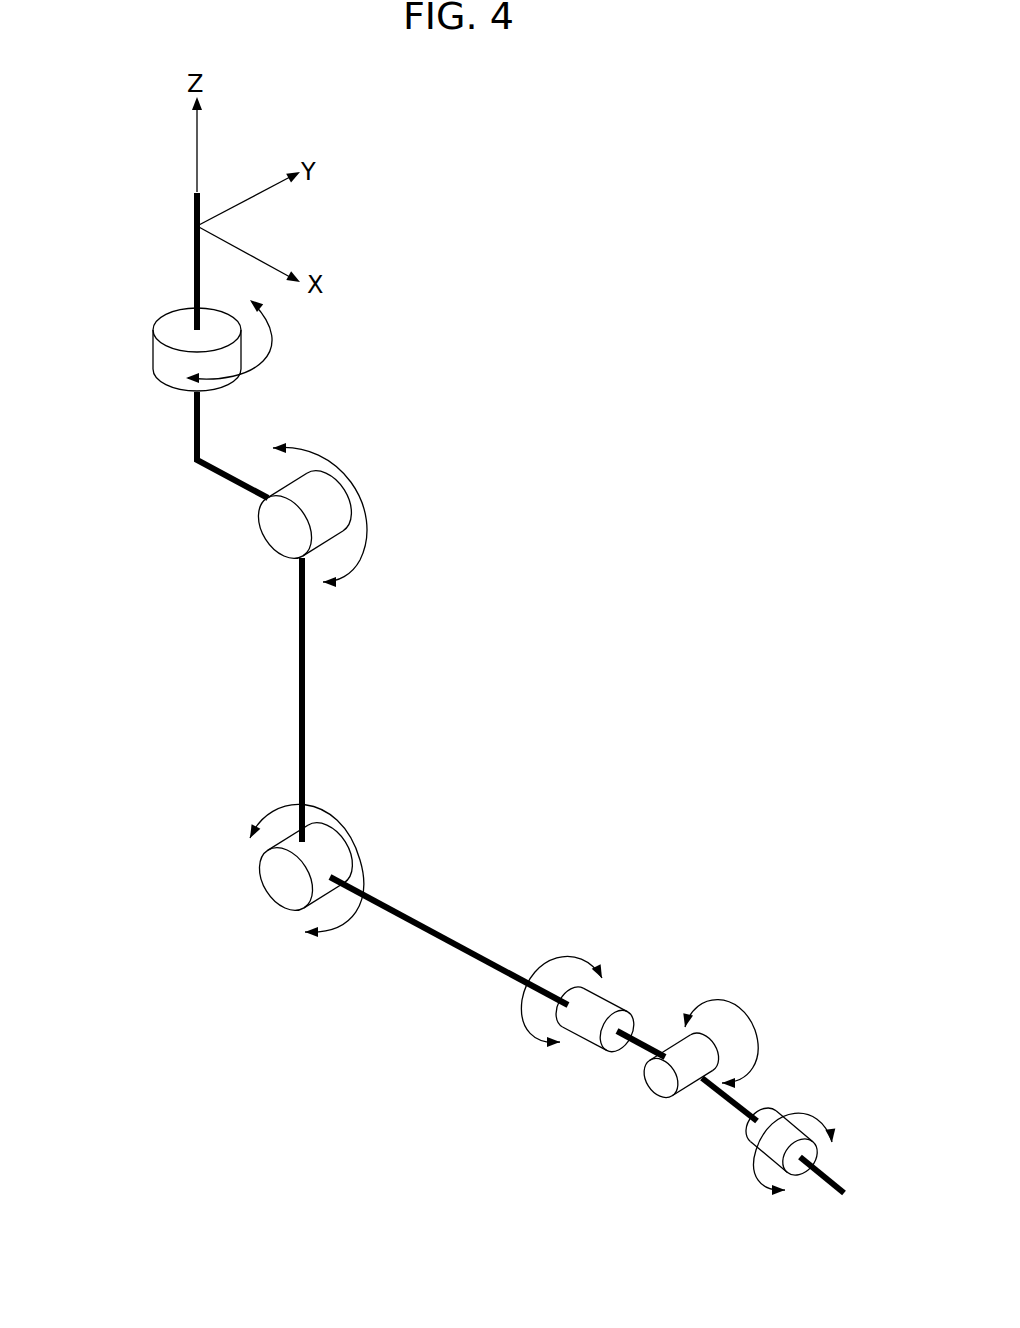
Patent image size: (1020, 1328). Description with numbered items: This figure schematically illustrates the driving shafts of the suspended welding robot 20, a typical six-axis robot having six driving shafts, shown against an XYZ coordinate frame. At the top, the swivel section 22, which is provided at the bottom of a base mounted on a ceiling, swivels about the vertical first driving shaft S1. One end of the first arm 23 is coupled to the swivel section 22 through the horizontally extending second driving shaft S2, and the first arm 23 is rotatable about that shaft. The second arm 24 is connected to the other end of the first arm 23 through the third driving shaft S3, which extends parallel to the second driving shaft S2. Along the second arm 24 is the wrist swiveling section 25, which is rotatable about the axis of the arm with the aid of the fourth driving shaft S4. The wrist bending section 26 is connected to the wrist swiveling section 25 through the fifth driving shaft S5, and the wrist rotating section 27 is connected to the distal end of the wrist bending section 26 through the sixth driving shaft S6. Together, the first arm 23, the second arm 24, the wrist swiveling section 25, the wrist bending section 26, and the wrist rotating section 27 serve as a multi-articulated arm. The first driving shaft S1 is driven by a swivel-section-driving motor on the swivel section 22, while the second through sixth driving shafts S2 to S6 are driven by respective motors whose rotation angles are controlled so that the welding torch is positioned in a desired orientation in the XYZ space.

The suspended welding robot 20 is at (632, 818).
The swivel section 22 is at (201, 345).
The first arm 23 is at (298, 678).
The second arm 24 is at (440, 940).
The wrist swiveling section 25 is at (638, 1047).
The wrist bending section 26 is at (728, 1105).
The wrist rotating section 27 is at (830, 1192).
The first driving shaft S1 is at (153, 355).
The second driving shaft S2 is at (333, 548).
The third driving shaft S3 is at (265, 893).
The fourth driving shaft S4 is at (600, 990).
The fifth driving shaft S5 is at (715, 1038).
The sixth driving shaft S6 is at (765, 1105).